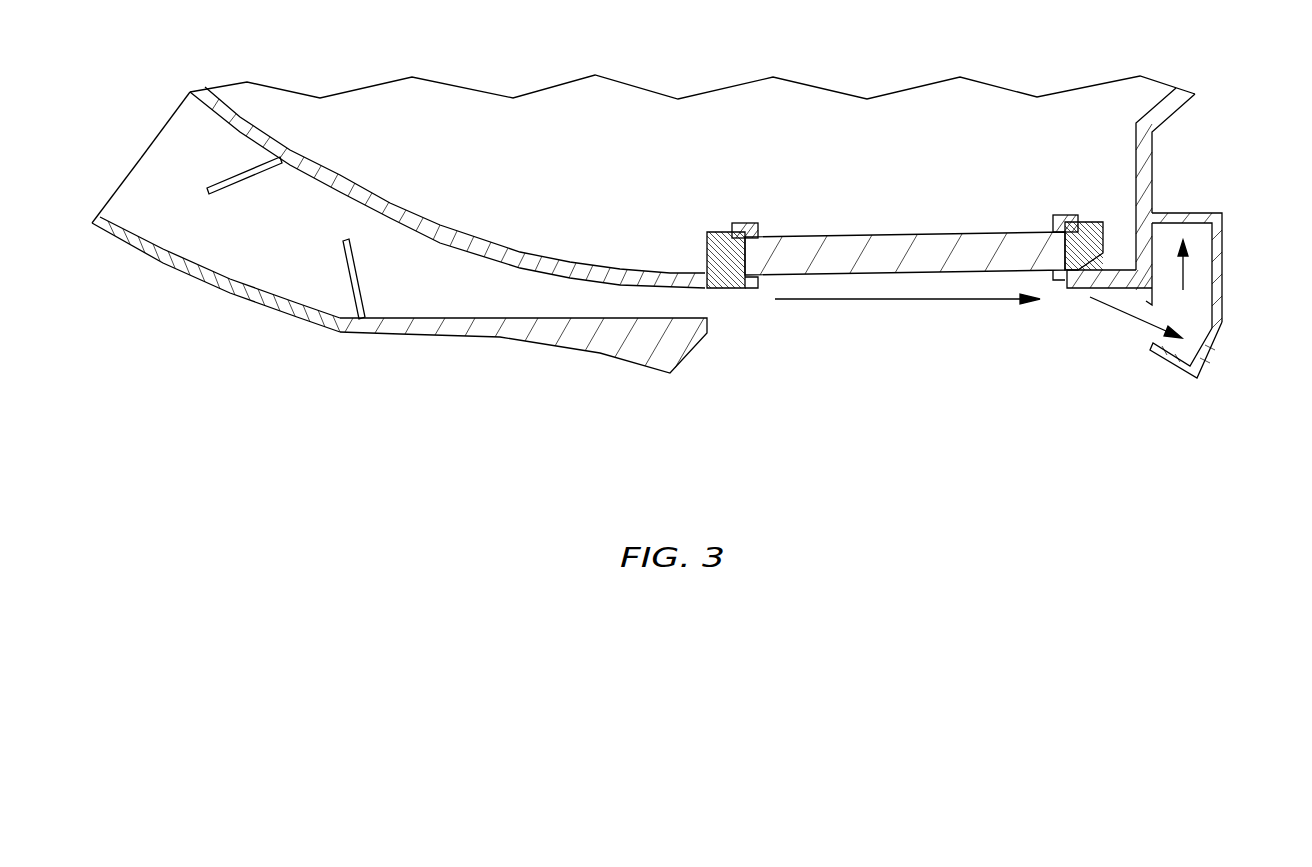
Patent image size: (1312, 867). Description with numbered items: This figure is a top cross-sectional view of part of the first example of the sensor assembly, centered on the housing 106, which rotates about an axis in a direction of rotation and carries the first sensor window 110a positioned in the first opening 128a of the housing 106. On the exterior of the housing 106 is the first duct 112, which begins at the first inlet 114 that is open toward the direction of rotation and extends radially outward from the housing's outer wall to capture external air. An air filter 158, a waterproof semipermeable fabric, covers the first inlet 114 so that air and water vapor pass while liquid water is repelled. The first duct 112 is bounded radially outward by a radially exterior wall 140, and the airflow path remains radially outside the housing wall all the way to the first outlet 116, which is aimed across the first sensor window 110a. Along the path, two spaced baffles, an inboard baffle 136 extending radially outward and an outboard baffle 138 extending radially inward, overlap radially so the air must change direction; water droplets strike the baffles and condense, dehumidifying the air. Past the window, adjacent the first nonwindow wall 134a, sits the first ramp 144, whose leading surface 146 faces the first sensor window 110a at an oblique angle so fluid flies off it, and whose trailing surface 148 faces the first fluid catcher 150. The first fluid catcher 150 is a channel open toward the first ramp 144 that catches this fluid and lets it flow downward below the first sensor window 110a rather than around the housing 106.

The housing 106 is at (1195, 110).
The first sensor window 110a is at (912, 230).
The first duct 112 is at (424, 288).
The first inlet 114 is at (130, 168).
The first outlet 116 is at (710, 306).
The first opening 128a is at (1063, 283).
The first nonwindow wall 134a is at (1155, 192).
The inboard baffle 136 is at (243, 187).
The outboard baffle 138 is at (340, 270).
The radially exterior wall 140 is at (297, 323).
The first ramp 144 is at (1140, 282).
The leading surface 146 is at (1137, 287).
The trailing surface 148 is at (1155, 295).
The first fluid catcher 150 is at (1210, 352).
The air filter 158 is at (163, 118).